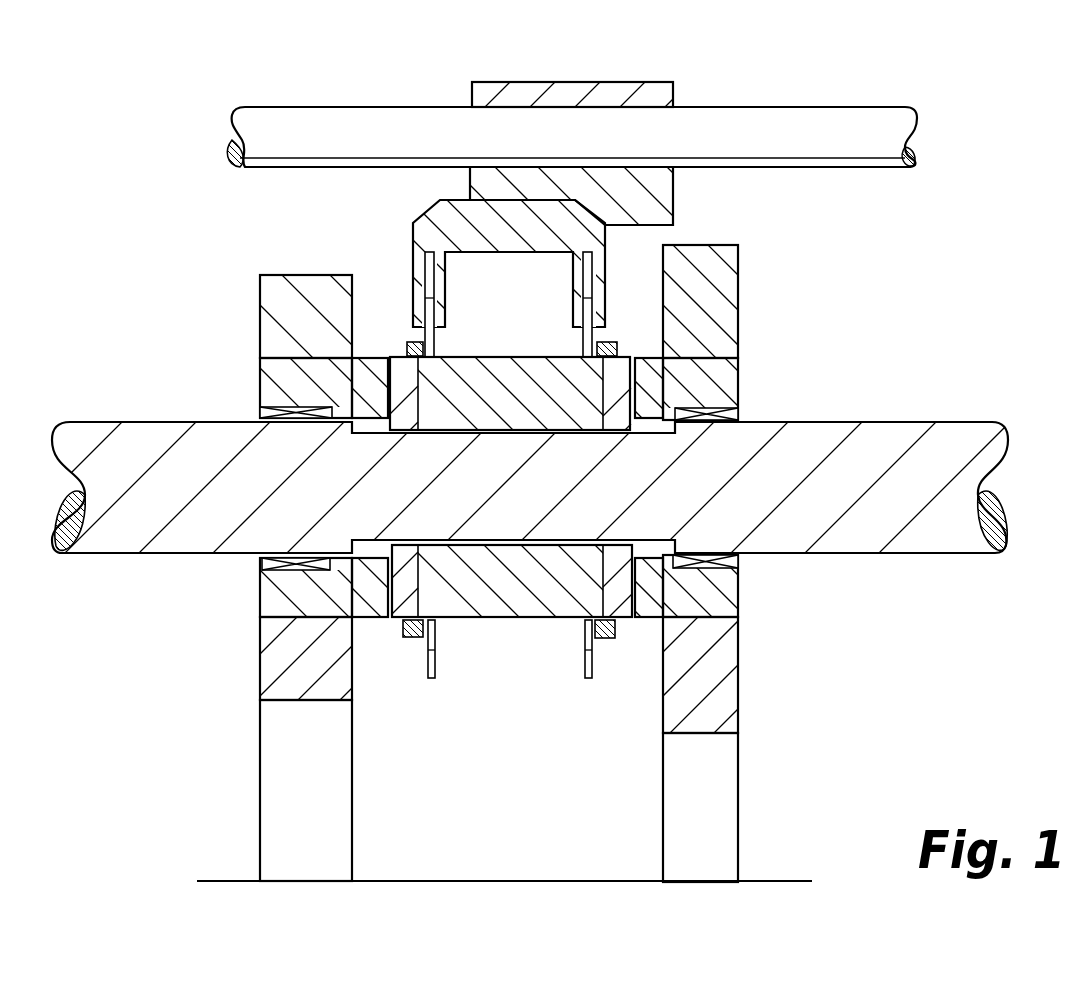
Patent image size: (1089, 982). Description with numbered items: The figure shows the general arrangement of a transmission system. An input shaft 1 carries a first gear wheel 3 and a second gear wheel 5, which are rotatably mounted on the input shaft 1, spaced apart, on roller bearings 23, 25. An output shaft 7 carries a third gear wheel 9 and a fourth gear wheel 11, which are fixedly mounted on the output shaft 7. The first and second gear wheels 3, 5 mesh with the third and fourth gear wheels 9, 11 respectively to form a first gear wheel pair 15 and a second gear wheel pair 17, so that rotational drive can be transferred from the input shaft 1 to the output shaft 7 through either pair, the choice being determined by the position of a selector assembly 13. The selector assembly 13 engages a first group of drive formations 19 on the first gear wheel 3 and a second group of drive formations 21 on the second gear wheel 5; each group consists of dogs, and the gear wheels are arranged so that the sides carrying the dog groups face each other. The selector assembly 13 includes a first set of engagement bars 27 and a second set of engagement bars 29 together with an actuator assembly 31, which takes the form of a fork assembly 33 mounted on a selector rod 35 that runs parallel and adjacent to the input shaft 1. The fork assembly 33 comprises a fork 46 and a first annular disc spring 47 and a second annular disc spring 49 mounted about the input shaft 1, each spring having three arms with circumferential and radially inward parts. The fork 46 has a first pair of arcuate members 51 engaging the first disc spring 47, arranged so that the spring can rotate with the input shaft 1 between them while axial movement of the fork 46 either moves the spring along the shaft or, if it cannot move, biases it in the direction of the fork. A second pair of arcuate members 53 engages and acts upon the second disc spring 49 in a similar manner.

The input shaft 1 is at (952, 440).
The first gear wheel 3 is at (273, 288).
The second gear wheel 5 is at (727, 253).
The output shaft 7 is at (748, 907).
The third gear wheel 9 is at (273, 776).
The fourth gear wheel 11 is at (718, 775).
The selector assembly 13 is at (340, 222).
The first gear wheel pair 15 is at (250, 692).
The second gear wheel pair 17 is at (743, 718).
The first group of drive formations 19 is at (367, 380).
The second group of drive formations 21 is at (648, 587).
The roller bearing 23 is at (327, 413).
The roller bearing 25 is at (733, 413).
The first set of engagement bars 27 is at (410, 354).
The second set of engagement bars 29 is at (500, 635).
The actuator assembly 31 is at (683, 83).
The fork assembly 33 is at (474, 207).
The selector rod 35 is at (860, 122).
The fork 46 is at (467, 210).
The first annular disc spring 47 is at (427, 337).
The second annular disc spring 49 is at (590, 337).
The first pair of arcuate members 51 is at (414, 265).
The second pair of arcuate members 53 is at (580, 290).